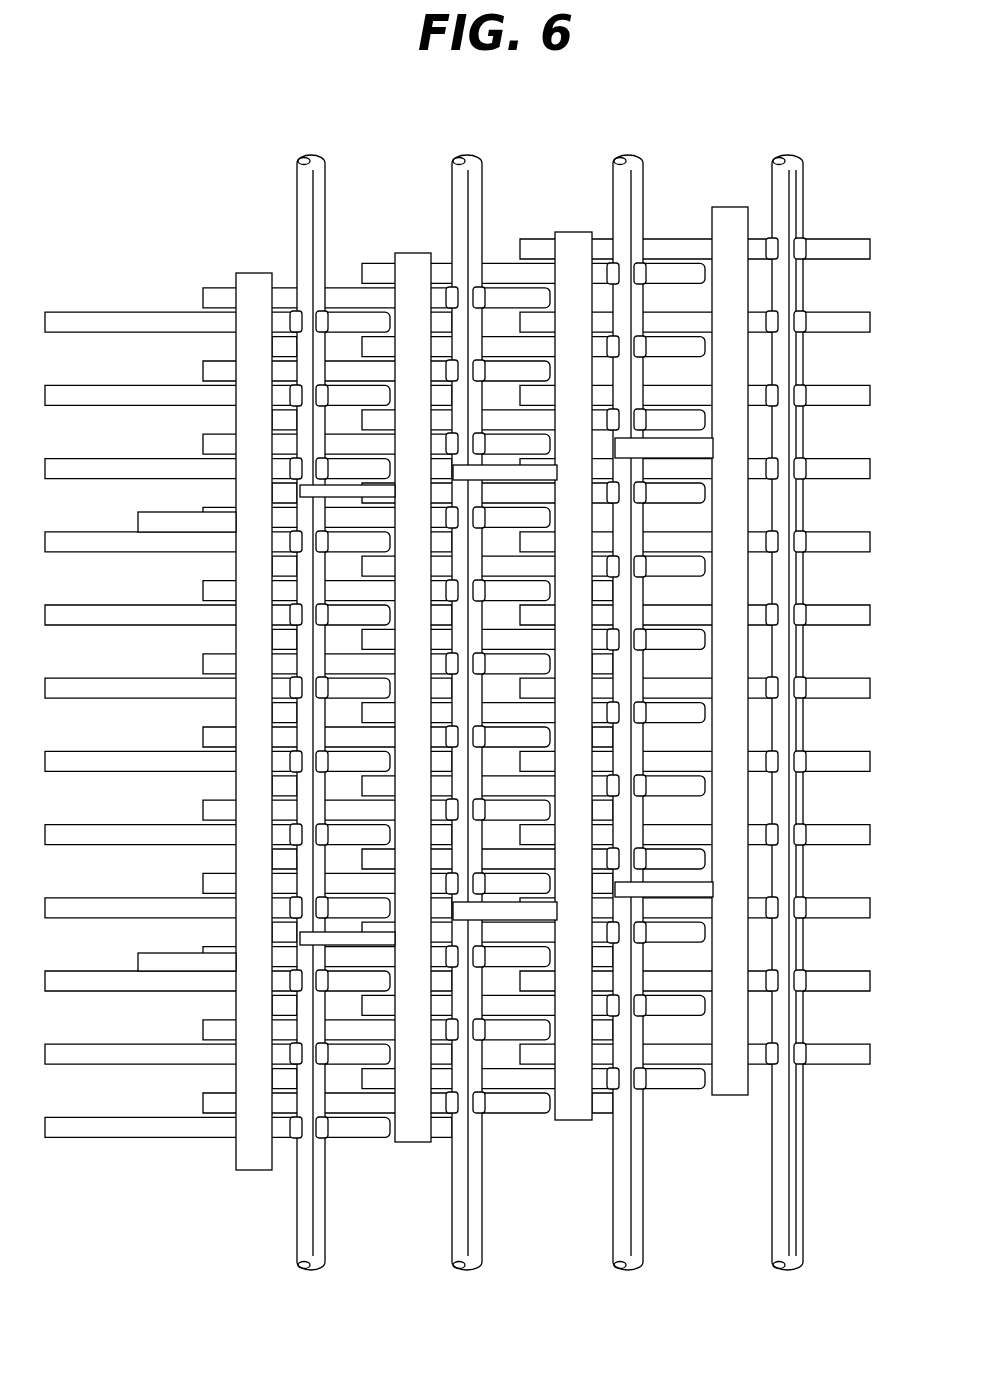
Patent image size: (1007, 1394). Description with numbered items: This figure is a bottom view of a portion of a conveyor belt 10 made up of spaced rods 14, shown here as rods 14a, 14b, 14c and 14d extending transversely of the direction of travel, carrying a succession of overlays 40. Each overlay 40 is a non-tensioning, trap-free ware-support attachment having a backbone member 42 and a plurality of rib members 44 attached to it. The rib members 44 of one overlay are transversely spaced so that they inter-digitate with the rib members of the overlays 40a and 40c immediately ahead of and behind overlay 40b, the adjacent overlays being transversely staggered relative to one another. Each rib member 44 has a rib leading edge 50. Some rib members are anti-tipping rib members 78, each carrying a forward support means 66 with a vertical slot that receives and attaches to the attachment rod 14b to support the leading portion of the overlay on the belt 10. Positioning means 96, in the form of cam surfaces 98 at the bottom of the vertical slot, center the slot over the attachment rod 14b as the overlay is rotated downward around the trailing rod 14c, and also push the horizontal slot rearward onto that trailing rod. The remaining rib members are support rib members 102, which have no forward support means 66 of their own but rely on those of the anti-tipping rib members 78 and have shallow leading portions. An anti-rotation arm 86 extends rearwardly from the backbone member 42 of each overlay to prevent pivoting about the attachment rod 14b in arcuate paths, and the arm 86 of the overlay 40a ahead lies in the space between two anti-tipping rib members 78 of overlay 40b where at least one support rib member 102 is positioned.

The belt 10 is at (729, 88).
The rods 14 is at (571, 1268).
The rod 14a is at (792, 157).
The attachment rod 14b is at (627, 155).
The trailing rod 14c is at (460, 157).
The rod 14d is at (305, 157).
The overlay 40 is at (204, 673).
The overlay 40a is at (728, 206).
The overlay 40b is at (567, 231).
The overlay 40c is at (406, 252).
The backbone member 42 is at (716, 222).
The rib members 44 is at (44, 556).
The rib leading edge 50 is at (862, 342).
The forward support means 66 is at (813, 228).
The anti-tipping rib member 78 is at (843, 683).
The anti-rotation arm 86 is at (722, 449).
The positioning means 96 is at (801, 528).
The cam surfaces 98 is at (456, 1134).
The support rib members 102 is at (845, 472).